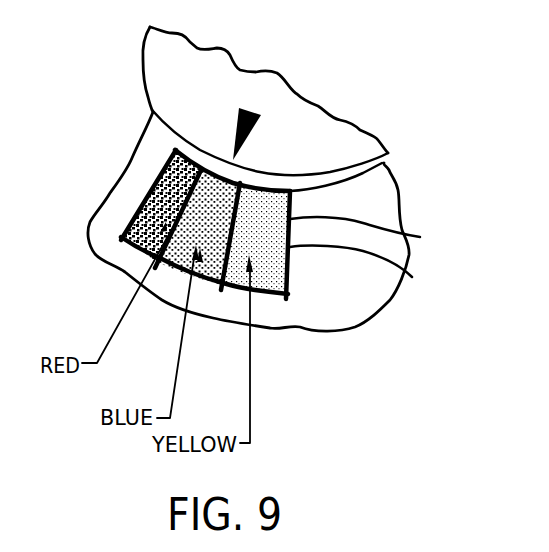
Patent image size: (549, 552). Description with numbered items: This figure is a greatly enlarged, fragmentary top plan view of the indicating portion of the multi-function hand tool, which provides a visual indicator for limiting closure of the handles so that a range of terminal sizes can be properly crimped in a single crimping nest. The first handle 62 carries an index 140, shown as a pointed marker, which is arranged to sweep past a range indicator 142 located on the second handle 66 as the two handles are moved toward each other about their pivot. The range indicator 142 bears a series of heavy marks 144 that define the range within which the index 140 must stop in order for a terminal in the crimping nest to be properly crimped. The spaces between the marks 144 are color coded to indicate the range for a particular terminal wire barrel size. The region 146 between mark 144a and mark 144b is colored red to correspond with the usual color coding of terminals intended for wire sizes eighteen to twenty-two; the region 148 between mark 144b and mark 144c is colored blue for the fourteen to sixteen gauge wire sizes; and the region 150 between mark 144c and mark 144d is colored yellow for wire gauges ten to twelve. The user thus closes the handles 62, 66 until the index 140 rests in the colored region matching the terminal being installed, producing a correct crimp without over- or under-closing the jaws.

The first handle 62 is at (220, 88).
The second handle 66 is at (353, 270).
The index 140 is at (253, 108).
The range indicator 142 is at (165, 142).
The heavy marks 144 is at (122, 236).
The mark 144a is at (150, 184).
The mark 144b is at (188, 263).
The mark 144c is at (236, 246).
The mark 144d is at (382, 236).
The red region 146 is at (162, 230).
The blue region 148 is at (201, 262).
The yellow region 150 is at (412, 277).